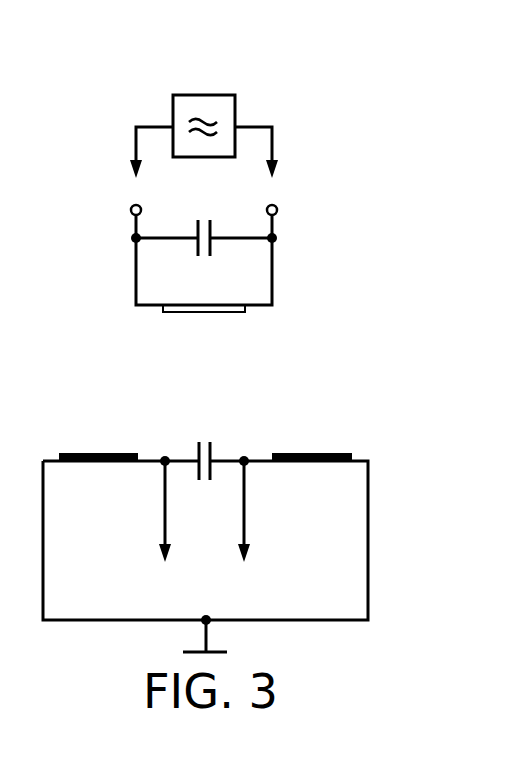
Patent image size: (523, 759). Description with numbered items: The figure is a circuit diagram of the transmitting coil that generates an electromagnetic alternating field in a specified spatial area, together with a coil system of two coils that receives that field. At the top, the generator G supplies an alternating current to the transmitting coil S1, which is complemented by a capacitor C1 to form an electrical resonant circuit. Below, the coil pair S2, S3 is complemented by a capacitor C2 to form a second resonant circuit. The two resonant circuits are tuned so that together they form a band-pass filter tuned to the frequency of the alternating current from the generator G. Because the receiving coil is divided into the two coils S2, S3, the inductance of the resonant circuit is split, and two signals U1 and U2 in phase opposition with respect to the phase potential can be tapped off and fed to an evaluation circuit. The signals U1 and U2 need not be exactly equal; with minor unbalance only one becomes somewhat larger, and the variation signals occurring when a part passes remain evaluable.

The generator G is at (247, 100).
The capacitor C1 is at (228, 204).
The transmitting coil S1 is at (210, 312).
The capacitor C2 is at (206, 442).
The receiving coil S2 is at (127, 513).
The receiving coil S3 is at (338, 513).
The signal U1 is at (166, 532).
The signal U2 is at (244, 532).